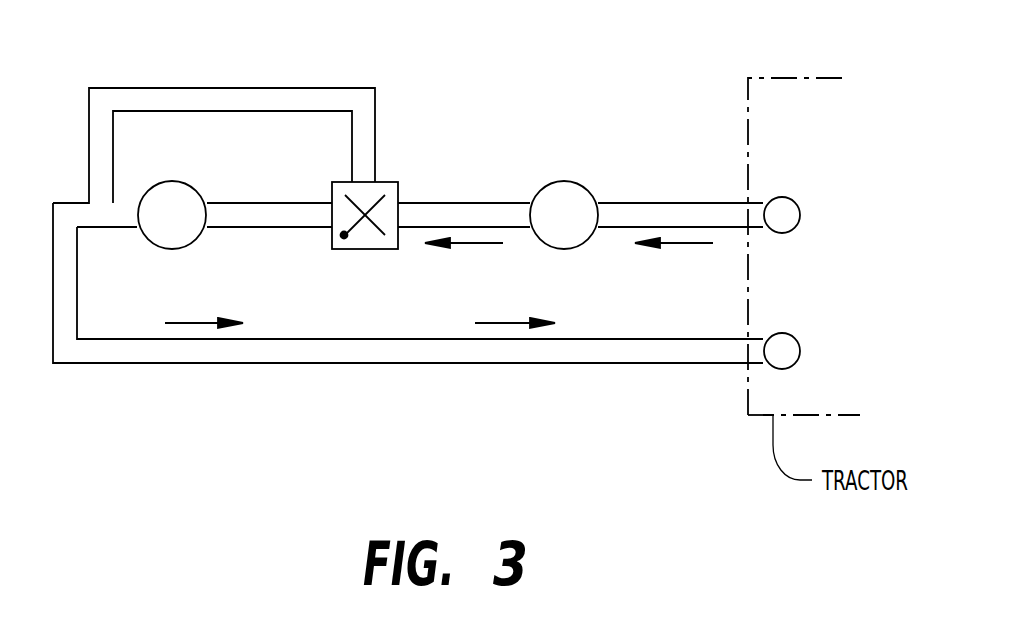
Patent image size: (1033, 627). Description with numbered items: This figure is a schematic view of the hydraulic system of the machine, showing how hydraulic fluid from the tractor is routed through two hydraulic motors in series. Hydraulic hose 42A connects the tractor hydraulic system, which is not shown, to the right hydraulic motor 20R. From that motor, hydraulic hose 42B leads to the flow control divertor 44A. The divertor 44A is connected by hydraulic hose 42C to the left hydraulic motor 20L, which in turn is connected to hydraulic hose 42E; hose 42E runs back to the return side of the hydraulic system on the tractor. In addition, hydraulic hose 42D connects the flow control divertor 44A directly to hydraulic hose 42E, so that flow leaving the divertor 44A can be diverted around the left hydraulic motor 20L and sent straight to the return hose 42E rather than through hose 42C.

The hydraulic hose 42D is at (228, 88).
The hydraulic motor 20L is at (168, 249).
The hydraulic hose 42C is at (257, 227).
The flow control divertor 44A is at (388, 182).
The hydraulic hose 42B is at (456, 203).
The hydraulic motor 20R is at (567, 182).
The hydraulic hose 42A is at (635, 203).
The hydraulic hose 42E is at (298, 363).